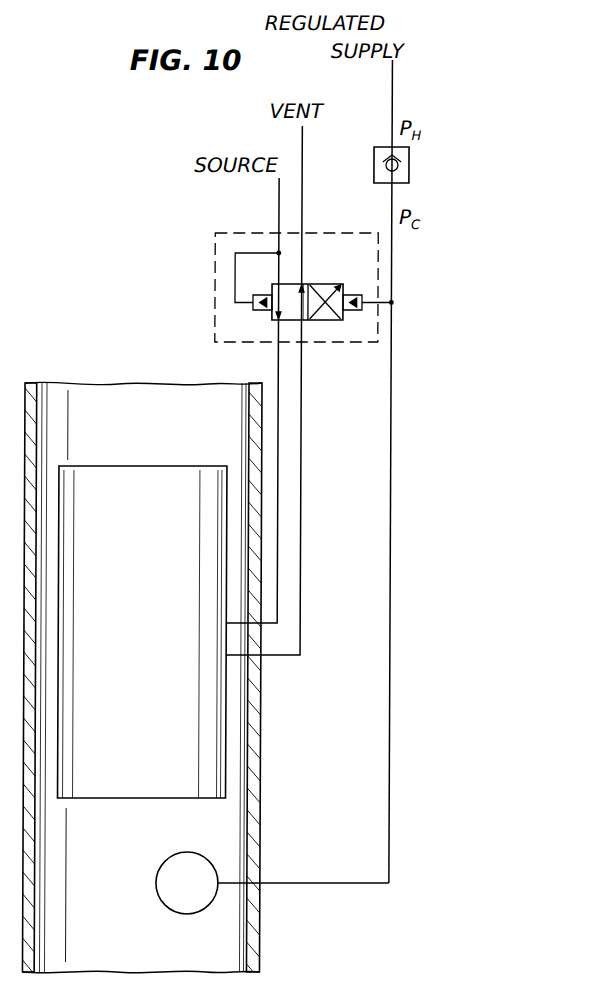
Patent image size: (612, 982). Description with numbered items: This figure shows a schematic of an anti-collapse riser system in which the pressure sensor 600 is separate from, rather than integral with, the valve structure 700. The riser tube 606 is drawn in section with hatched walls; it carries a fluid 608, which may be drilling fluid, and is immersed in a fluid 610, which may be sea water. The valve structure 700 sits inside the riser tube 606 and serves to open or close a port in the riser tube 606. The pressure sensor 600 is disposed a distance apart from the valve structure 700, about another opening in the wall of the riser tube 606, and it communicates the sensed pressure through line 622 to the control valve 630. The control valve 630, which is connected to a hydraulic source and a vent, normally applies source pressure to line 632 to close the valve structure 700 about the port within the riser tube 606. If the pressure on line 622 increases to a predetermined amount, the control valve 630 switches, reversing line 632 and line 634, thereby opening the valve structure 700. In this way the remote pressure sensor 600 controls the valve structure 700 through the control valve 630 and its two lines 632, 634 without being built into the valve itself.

The pressure sensor 600 is at (166, 901).
The riser tube 606 is at (264, 738).
The drilling fluid 608 is at (124, 413).
The sea water 610 is at (350, 801).
The control pressure line 622 is at (320, 882).
The control valve 630 is at (349, 343).
The source pressure line 632 is at (281, 562).
The vent line 634 is at (304, 619).
The valve structure 700 is at (229, 690).